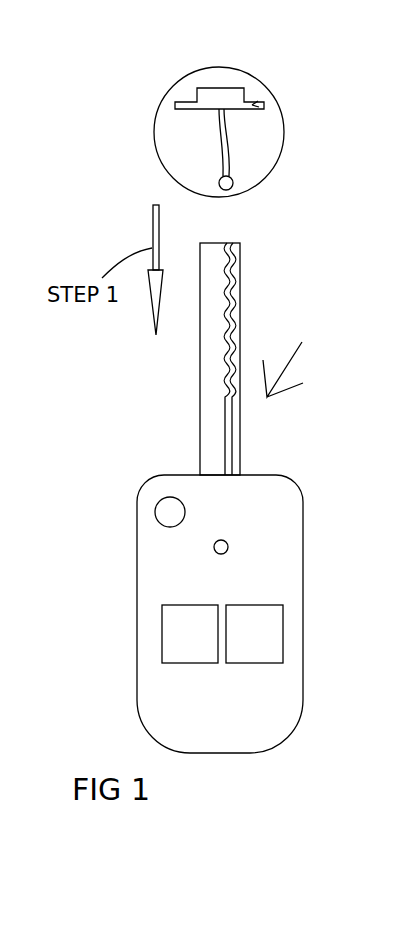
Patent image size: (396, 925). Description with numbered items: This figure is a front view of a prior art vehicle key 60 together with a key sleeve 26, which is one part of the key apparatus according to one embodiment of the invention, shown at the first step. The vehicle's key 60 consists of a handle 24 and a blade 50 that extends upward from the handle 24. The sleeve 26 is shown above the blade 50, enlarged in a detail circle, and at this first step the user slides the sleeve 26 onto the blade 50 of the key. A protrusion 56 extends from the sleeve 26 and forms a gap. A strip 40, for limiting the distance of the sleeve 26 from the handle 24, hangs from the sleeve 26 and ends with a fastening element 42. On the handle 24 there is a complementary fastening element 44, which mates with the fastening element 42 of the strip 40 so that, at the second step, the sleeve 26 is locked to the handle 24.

The key's handle 24 is at (262, 707).
The sleeve 26 is at (218, 92).
The strip 40 is at (222, 132).
The fastening element of the strip 42 is at (221, 178).
The complementary fastening element 44 is at (230, 545).
The key's blade 50 is at (208, 393).
The protrusion 56 is at (252, 105).
The vehicle's key 60 is at (296, 357).